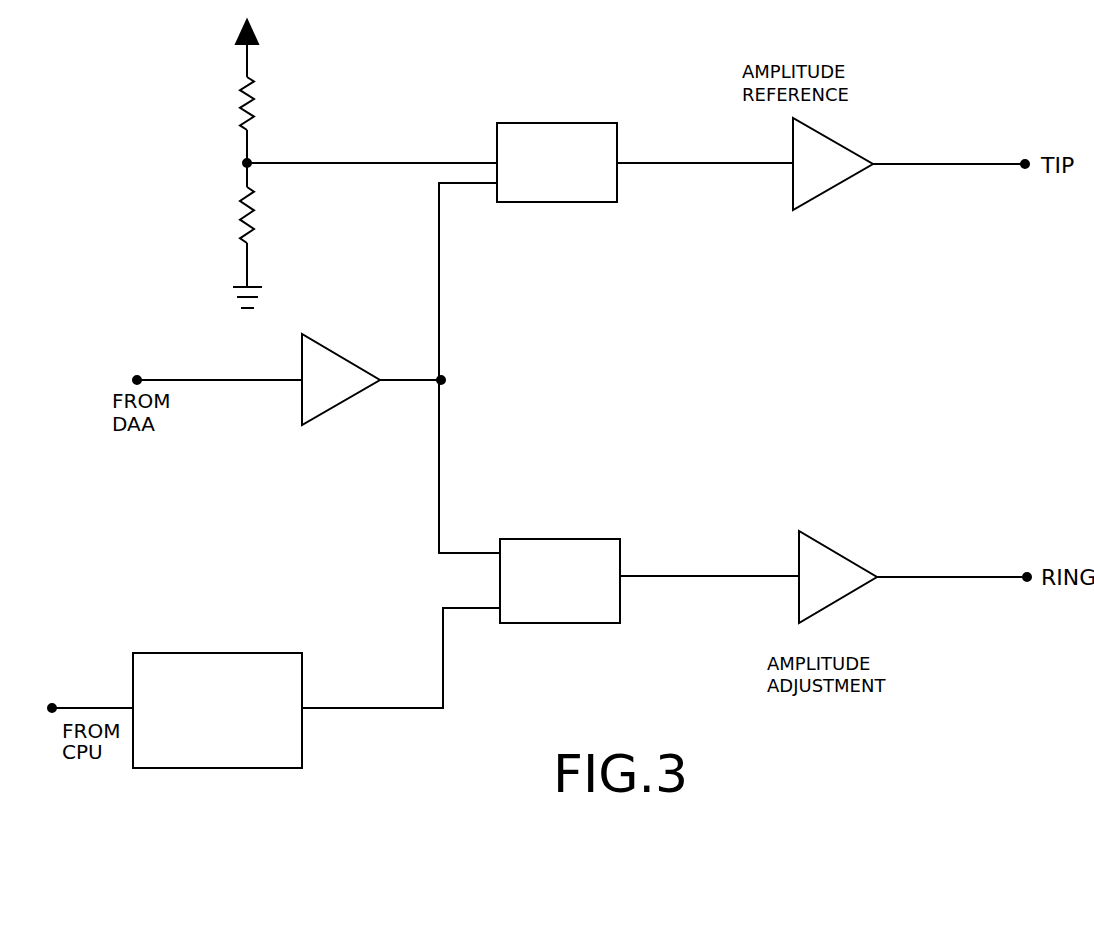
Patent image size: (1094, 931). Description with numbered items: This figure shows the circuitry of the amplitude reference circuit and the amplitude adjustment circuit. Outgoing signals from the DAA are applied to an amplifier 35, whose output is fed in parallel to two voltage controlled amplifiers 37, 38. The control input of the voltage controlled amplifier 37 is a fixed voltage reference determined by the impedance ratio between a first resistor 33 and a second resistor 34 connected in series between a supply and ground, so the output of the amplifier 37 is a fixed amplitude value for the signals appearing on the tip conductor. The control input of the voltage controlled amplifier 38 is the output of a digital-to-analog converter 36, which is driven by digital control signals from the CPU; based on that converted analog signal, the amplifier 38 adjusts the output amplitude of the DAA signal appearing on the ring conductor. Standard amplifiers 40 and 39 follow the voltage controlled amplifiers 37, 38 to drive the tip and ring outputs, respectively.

The resistor 33 is at (243, 103).
The resistor 34 is at (243, 215).
The amplifier 35 is at (341, 383).
The digital-to-analog (D/A) converter 36 is at (217, 699).
The voltage controlled amplifier 37 is at (557, 177).
The voltage controlled amplifier 38 is at (560, 569).
The amplifier 39 is at (838, 575).
The amplifier 40 is at (833, 172).